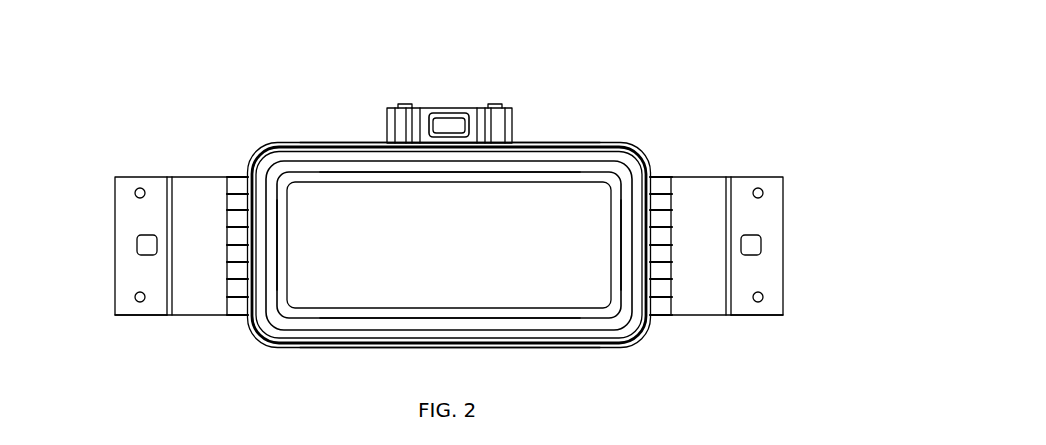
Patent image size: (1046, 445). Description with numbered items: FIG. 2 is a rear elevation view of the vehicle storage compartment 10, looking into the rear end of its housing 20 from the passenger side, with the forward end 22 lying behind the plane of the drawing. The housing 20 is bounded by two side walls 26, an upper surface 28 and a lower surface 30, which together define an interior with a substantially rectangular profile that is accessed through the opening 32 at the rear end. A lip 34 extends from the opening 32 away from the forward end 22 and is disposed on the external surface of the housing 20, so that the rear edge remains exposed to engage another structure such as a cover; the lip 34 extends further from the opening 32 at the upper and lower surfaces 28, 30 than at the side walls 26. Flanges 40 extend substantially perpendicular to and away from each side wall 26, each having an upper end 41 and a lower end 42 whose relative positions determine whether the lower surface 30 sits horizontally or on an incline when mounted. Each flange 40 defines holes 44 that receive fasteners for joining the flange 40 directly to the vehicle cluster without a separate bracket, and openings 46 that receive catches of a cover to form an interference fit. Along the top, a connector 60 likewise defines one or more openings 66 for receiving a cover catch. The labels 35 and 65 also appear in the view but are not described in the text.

The vehicle storage compartment 10 is at (657, 101).
The housing 20 is at (569, 139).
The forward end 22 is at (348, 197).
The side walls 26 is at (272, 276).
The upper surface 28 is at (392, 167).
The lower surface 30 is at (517, 323).
The opening 32 is at (610, 146).
The lip 34 is at (639, 148).
The outer edge / seal 35 is at (518, 143).
The flanges 40 is at (213, 187).
The upper end of the flange 41 is at (155, 173).
The lower end of the flange 42 is at (152, 319).
The holes 44 is at (137, 192).
The openings 46 is at (150, 247).
The connector 60 is at (441, 105).
The connector terminal 65 is at (403, 105).
The openings 66 is at (450, 127).